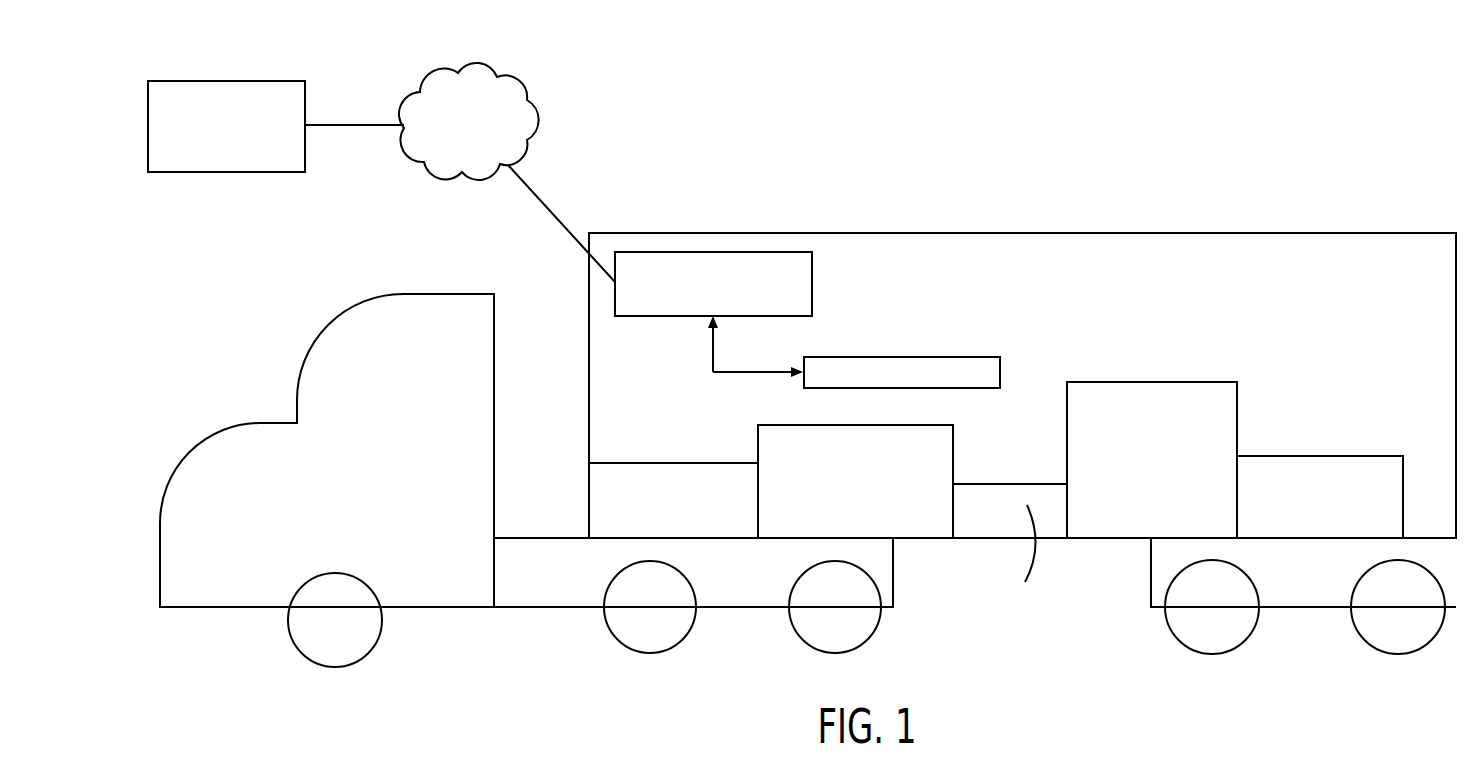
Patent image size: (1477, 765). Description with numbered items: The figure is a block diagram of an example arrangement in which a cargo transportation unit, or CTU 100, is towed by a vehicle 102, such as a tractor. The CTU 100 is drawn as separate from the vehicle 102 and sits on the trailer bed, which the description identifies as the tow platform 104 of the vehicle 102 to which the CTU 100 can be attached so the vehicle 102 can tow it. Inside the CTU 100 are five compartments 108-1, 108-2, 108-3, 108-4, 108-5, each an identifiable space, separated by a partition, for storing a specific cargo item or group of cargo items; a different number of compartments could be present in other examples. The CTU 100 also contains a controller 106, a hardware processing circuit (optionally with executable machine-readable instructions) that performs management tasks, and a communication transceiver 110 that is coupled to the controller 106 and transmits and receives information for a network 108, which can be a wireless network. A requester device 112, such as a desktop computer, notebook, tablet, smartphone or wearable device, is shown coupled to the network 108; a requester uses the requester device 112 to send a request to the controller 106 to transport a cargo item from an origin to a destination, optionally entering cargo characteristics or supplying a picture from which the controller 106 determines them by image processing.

The cargo transportation unit (CTU) 100 is at (998, 233).
The vehicle 102 is at (349, 367).
The trailer chassis 104 is at (563, 574).
The controller 106 is at (903, 357).
The network 108 is at (470, 70).
The compartment 108-1 is at (706, 460).
The compartment 108-2 is at (866, 422).
The compartment 108-3 is at (965, 480).
The compartment 108-4 is at (1207, 380).
The compartment 108-5 is at (1373, 454).
The communication transceiver 110 is at (812, 286).
The requester device 112 is at (226, 80).